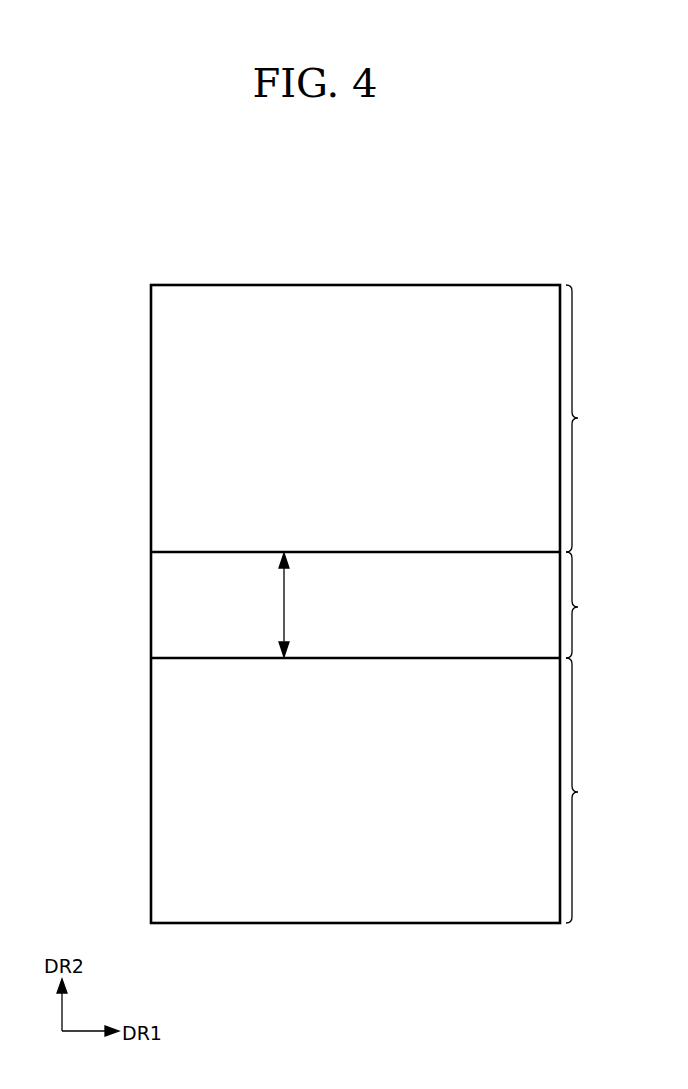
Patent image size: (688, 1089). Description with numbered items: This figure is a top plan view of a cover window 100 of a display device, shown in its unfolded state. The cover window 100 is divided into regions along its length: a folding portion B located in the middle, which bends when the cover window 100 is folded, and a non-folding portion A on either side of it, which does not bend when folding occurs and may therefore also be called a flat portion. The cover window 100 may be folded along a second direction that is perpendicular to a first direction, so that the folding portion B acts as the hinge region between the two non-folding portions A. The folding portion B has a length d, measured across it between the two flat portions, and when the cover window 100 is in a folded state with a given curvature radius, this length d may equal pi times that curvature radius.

The cover window 100 is at (138, 276).
The non-folding portion A is at (581, 604).
The folding portion B is at (581, 605).
The length of the folding portion d is at (291, 605).